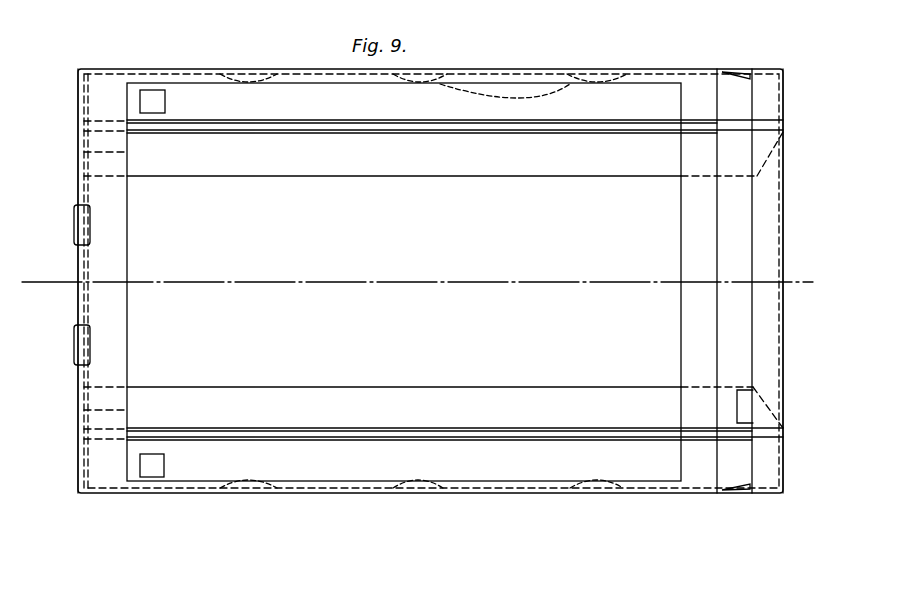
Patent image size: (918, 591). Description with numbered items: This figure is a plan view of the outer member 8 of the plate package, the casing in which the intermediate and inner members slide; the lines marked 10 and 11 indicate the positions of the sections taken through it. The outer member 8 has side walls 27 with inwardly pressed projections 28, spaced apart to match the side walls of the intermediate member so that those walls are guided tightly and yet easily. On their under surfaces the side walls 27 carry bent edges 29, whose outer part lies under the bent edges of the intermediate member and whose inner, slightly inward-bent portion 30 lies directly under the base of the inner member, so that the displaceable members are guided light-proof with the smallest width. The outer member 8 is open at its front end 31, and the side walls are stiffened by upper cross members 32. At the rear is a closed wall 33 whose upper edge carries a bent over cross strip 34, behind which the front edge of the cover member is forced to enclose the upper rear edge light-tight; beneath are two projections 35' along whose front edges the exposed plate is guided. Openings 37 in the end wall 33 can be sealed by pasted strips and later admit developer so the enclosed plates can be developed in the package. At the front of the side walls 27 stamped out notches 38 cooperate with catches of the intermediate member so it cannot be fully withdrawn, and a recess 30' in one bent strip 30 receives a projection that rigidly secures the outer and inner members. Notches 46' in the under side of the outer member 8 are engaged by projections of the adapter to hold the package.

The outer member 8 is at (312, 66).
The section line 10- 10 is at (58, 262).
The section line 11- 11 is at (248, 545).
The side walls 27 is at (496, 73).
The inwardly pressed projections 28 is at (222, 514).
The bent edges 29 is at (412, 108).
The inwardly bent portion 30 is at (433, 280).
The recess 30' is at (695, 389).
The front end 31 is at (783, 380).
The upper cross members 32 is at (757, 218).
The closed wall 33 is at (78, 194).
The bent over cross strip 34 is at (118, 270).
The projections 35' is at (137, 284).
The openings 37 is at (90, 227).
The stamped out notches 38 is at (735, 76).
The notches 46' is at (177, 261).